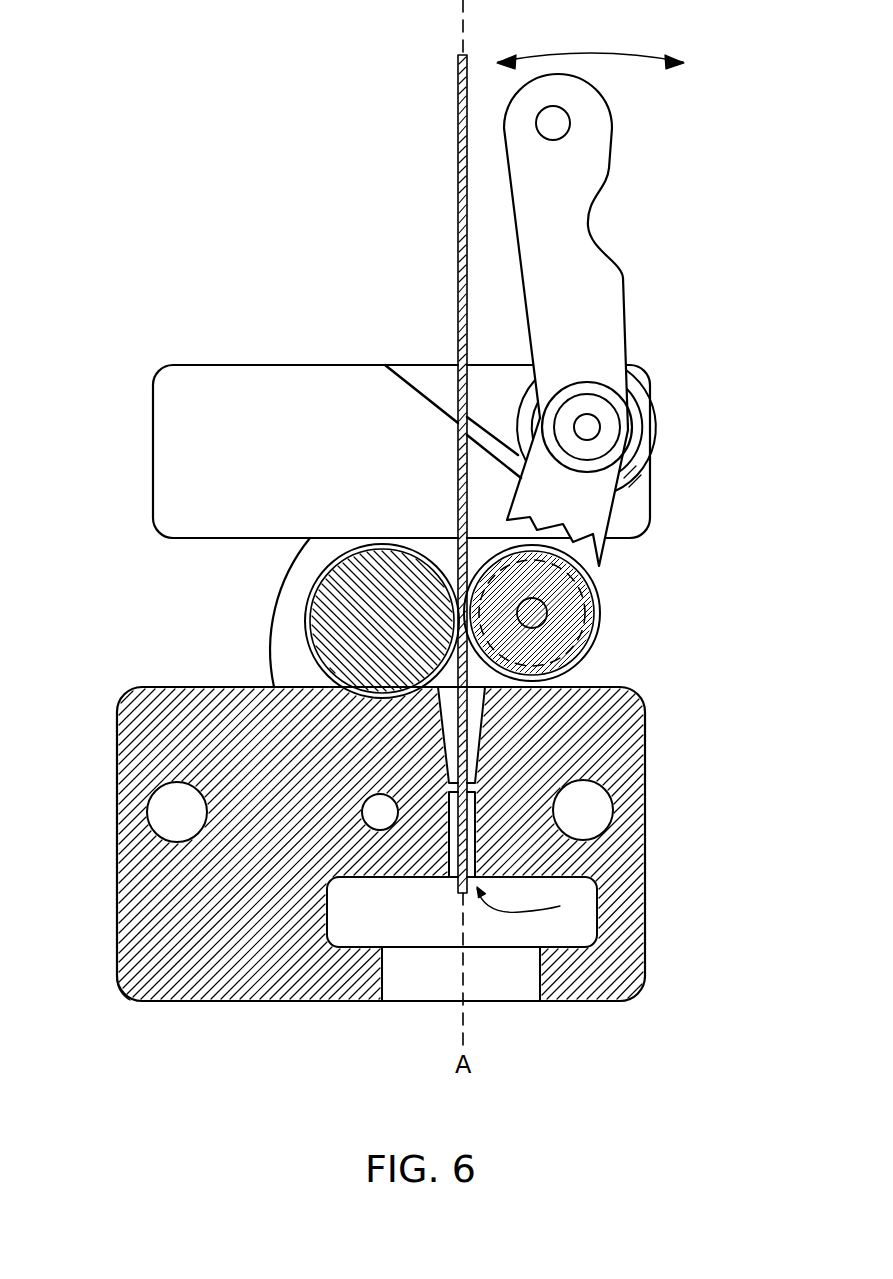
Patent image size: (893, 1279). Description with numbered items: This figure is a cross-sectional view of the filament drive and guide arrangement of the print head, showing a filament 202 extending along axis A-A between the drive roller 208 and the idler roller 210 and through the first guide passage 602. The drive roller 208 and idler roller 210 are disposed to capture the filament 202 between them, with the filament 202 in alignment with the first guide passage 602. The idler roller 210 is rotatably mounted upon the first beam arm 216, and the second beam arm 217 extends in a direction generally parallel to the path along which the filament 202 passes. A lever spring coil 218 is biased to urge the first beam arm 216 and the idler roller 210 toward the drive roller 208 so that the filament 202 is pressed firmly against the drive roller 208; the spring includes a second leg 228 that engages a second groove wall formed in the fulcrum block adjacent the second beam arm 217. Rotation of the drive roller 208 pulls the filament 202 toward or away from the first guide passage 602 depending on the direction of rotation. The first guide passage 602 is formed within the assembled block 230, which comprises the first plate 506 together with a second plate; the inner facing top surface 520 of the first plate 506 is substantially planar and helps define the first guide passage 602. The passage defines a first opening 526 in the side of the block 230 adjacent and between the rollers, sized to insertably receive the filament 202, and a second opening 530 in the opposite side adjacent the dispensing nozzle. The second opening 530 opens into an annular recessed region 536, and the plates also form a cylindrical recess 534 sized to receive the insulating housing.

The filament 202 is at (455, 195).
The drive roller 208 is at (305, 612).
The idler roller 210 is at (603, 614).
The first beam arm 216 is at (615, 525).
The second beam arm 217 is at (607, 298).
The lever spring coil 218 is at (660, 333).
The second leg 228 is at (480, 428).
The block 230 is at (412, 364).
The first plate 506 is at (646, 780).
The inner facing top surface 520 is at (130, 1000).
The first opening 526 is at (448, 694).
The second opening 530 is at (598, 882).
The cylindrical recess 534 is at (434, 984).
The annular recessed region 536 is at (343, 906).
The first guide passage 602 is at (478, 735).